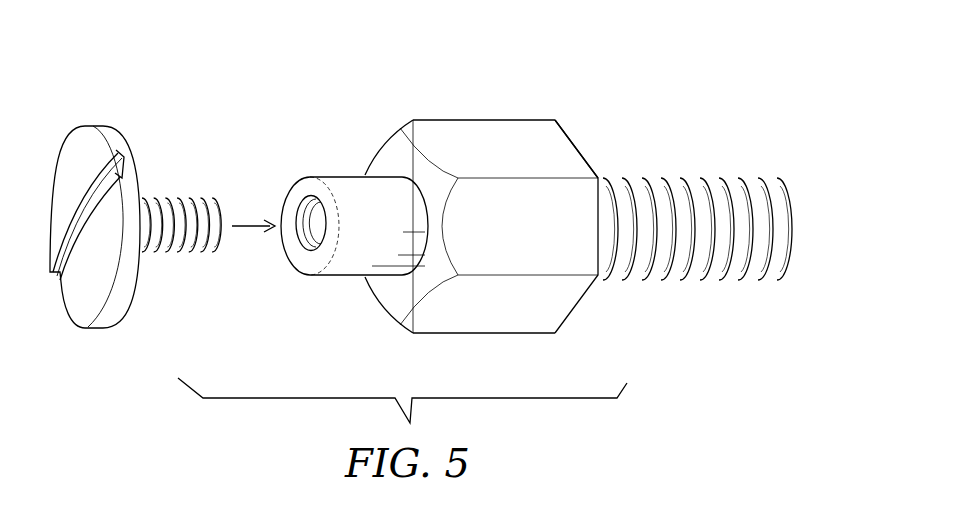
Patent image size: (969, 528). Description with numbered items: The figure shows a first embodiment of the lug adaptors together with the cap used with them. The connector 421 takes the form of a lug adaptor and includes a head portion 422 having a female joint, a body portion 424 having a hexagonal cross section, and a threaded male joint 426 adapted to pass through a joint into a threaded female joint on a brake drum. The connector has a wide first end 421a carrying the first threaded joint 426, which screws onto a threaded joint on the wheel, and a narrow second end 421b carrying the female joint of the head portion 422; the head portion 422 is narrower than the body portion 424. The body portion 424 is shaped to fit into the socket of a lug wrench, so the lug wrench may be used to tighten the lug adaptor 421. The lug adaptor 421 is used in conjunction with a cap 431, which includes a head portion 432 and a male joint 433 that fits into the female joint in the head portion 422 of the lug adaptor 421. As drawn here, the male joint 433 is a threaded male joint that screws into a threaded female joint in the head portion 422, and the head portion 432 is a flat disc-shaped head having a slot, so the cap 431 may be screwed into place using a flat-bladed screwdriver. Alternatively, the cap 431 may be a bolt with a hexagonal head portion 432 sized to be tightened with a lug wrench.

The connector 421 is at (579, 76).
The wide first end 421a is at (578, 146).
The narrow second end 421b is at (390, 318).
The head portion 422 is at (340, 183).
The body portion 424 is at (457, 125).
The threaded male joint 426 is at (684, 175).
The cap 431 is at (95, 352).
The head portion 432 is at (78, 142).
The male joint 433 is at (185, 207).